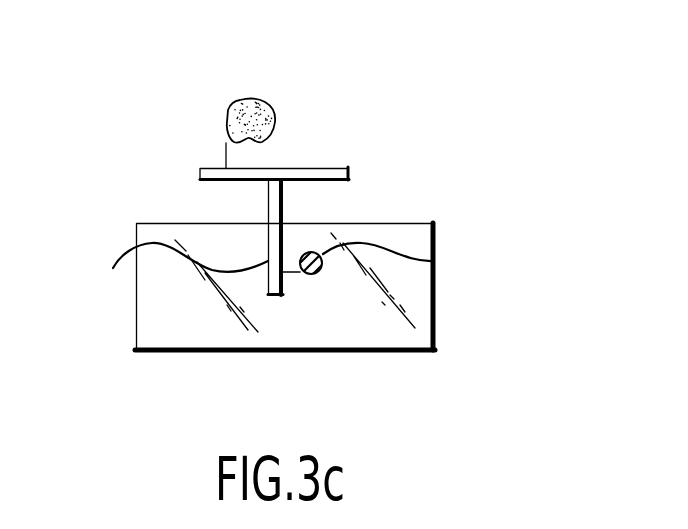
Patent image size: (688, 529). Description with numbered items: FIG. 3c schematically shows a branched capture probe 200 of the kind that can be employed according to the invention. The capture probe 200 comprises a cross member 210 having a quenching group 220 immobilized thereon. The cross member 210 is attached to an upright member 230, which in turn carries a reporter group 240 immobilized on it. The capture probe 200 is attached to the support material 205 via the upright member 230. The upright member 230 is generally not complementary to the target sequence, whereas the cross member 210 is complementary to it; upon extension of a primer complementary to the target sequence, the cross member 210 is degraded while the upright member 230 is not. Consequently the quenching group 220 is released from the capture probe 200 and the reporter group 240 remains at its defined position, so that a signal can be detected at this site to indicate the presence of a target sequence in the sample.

The capture probe 200 is at (389, 138).
The support material 205 is at (167, 337).
The cross member 210 is at (298, 168).
The quenching group 220 is at (227, 132).
The upright member 230 is at (244, 279).
The reporter group 240 is at (433, 261).